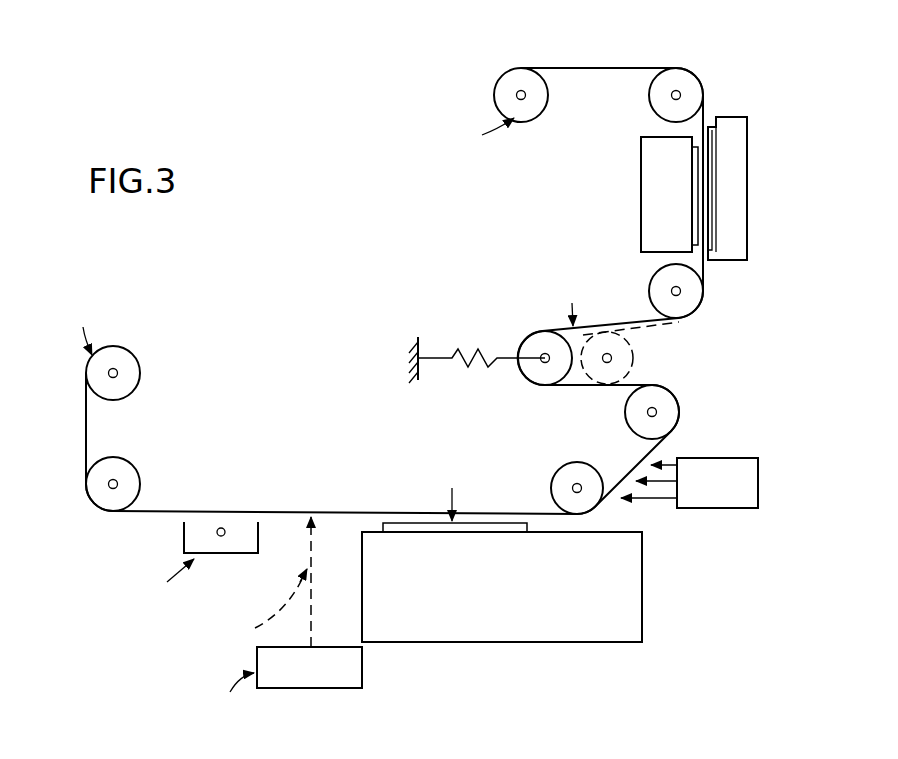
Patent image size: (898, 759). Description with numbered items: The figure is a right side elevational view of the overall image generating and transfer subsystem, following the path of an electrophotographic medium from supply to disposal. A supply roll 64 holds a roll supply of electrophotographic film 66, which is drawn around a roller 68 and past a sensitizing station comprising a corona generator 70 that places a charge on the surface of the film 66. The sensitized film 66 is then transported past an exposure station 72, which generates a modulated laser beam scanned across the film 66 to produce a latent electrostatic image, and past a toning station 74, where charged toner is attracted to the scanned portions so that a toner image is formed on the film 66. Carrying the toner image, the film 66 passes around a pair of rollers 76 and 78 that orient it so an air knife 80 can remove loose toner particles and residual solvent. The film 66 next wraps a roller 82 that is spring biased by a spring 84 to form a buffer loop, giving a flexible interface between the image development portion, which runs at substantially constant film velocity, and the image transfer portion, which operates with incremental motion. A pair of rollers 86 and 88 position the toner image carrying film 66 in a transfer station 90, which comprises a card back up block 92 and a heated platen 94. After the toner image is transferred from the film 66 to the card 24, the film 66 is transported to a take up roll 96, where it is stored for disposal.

The card 24 is at (713, 140).
The supply roll 64 is at (127, 365).
The electrophotographic film 66 is at (87, 413).
The roller 68 is at (118, 472).
The corona generator 70 is at (236, 561).
The exposure station 72 is at (363, 667).
The toning station 74 is at (521, 649).
The roller 76 is at (568, 468).
The roller 78 is at (667, 400).
The air knife 80 is at (735, 458).
The roller 82 is at (543, 373).
The spring 84 is at (480, 365).
The roller 86 is at (692, 298).
The roller 88 is at (680, 82).
The transfer station 90 is at (629, 170).
The card back up block 92 is at (738, 187).
The heated platen 94 is at (648, 210).
The take up roll 96 is at (517, 78).